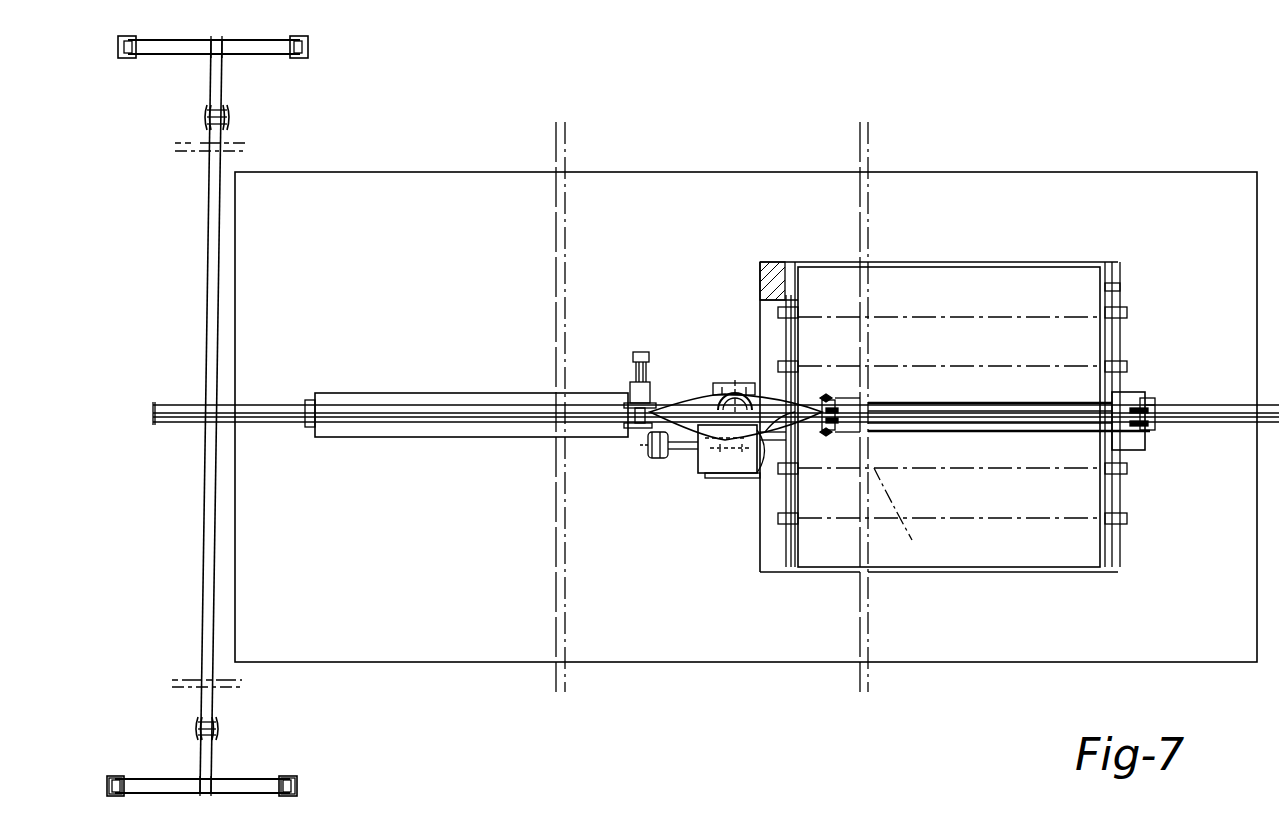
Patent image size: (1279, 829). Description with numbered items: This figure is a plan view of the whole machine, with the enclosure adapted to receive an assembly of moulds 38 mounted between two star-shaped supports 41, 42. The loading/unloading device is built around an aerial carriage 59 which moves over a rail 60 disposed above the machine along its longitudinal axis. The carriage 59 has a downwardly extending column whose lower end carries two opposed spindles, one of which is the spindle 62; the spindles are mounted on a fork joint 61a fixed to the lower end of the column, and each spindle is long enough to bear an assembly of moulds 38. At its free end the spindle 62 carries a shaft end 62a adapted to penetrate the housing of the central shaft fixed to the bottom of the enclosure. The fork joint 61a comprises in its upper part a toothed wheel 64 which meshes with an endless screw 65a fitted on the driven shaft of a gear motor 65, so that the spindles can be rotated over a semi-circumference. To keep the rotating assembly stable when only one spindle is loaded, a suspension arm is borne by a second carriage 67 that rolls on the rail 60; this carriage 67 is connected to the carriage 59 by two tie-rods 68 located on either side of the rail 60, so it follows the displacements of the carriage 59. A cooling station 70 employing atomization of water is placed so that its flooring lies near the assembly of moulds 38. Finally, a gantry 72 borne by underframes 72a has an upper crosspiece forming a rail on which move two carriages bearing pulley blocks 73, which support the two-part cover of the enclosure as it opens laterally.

The assembly of moulds 38 is at (880, 572).
The star-shaped support 41 is at (1124, 335).
The star-shaped support 42 is at (793, 340).
The aerial carriage 59 is at (654, 392).
The rail 60 is at (468, 412).
The fork joint 61a is at (727, 372).
The spindle 62 is at (380, 438).
The shaft end 62a is at (312, 428).
The toothed wheel 64 is at (693, 395).
The gear motor 65 is at (703, 457).
The endless screw 65a is at (735, 455).
The carriage 67 is at (1150, 400).
The tie-rods 68 is at (998, 402).
The cooling station 70 is at (966, 262).
The gantry 72 is at (209, 184).
The underframes 72a is at (118, 775).
The pulley blocks 73 is at (222, 115).